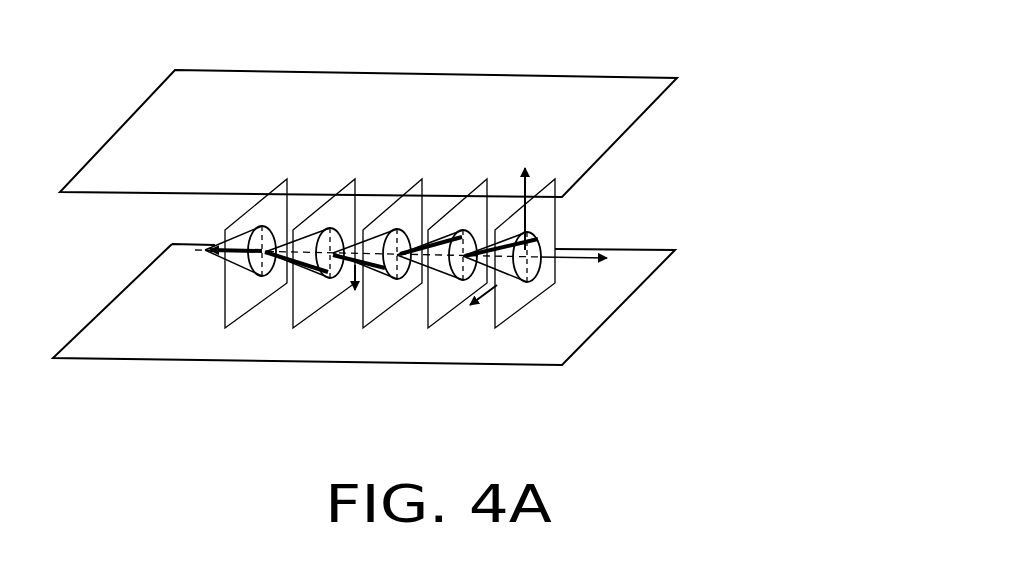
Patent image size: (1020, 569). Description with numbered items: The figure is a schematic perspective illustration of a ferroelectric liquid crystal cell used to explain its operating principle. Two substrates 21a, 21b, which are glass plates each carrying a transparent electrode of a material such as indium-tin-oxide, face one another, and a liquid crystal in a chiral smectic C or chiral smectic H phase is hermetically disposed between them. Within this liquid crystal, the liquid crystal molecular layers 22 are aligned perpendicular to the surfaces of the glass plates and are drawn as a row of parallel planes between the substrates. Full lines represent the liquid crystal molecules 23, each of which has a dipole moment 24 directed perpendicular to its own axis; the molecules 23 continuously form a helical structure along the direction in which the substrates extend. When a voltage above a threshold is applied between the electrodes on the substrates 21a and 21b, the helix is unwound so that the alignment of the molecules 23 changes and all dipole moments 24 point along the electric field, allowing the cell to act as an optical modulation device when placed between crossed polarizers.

The substrate 21a is at (610, 77).
The substrate 21b is at (612, 303).
The liquid crystal molecular layers 22 is at (555, 212).
The liquid crystal molecules 23 is at (213, 253).
The dipole moment (P⊥) 24 is at (245, 222).